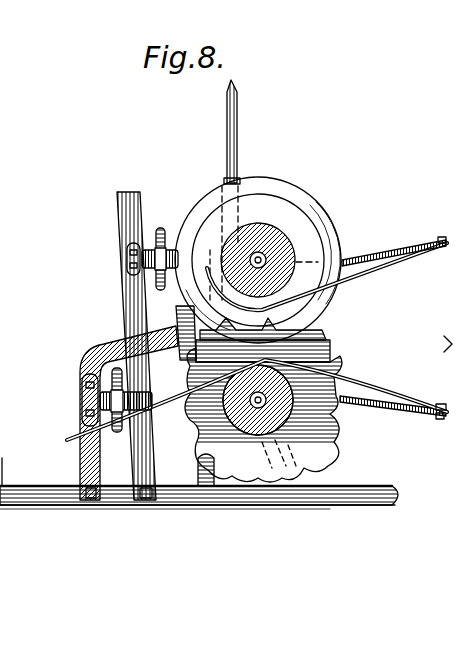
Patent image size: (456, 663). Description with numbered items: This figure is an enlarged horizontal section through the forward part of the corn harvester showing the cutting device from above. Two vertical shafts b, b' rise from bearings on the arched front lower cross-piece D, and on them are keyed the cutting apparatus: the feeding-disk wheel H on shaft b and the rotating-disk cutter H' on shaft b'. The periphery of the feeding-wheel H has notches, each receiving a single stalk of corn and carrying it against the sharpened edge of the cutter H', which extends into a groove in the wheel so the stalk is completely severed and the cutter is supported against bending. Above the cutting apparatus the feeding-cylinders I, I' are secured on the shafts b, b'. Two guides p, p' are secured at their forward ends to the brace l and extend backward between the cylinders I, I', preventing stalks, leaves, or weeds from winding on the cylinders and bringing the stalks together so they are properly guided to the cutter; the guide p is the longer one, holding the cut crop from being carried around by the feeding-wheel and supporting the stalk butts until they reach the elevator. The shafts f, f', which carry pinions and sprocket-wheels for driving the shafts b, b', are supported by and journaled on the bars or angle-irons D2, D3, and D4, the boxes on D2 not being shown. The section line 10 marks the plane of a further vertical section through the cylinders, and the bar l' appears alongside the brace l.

The lower cross-piece D is at (312, 483).
The bar or angle-iron D2 is at (174, 323).
The bar or angle-iron D3 is at (94, 264).
The bar or angle-iron D4 is at (82, 368).
The feeding-cylinder I' is at (258, 260).
The feeding-cylinder I is at (263, 417).
The rotating-disk cutter H' is at (279, 322).
The feeding-disk wheel H is at (278, 351).
The vertical shaft b' is at (314, 240).
The vertical shaft b is at (313, 416).
The brace l is at (393, 325).
The lower guide bar l' is at (427, 420).
The guide p' is at (327, 276).
The guide p is at (257, 400).
The shaft f' is at (152, 245).
The shaft f is at (124, 399).
The lever 10 is at (442, 348).